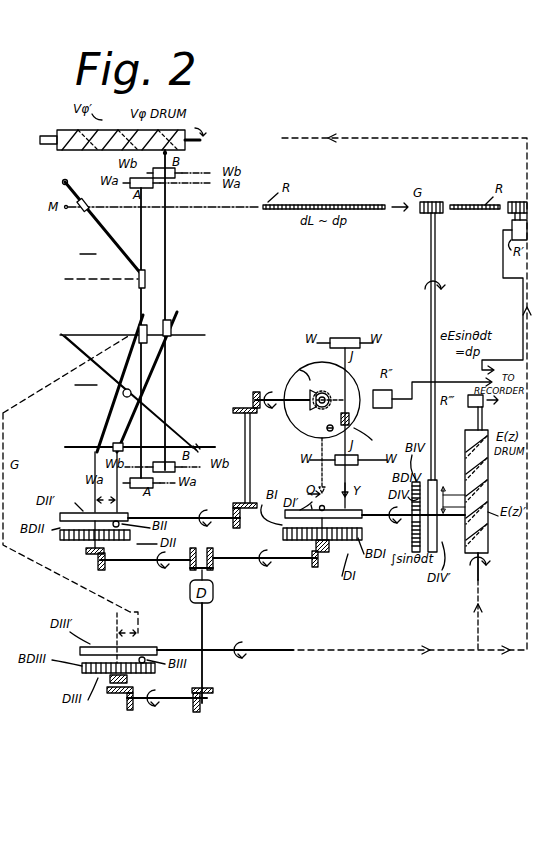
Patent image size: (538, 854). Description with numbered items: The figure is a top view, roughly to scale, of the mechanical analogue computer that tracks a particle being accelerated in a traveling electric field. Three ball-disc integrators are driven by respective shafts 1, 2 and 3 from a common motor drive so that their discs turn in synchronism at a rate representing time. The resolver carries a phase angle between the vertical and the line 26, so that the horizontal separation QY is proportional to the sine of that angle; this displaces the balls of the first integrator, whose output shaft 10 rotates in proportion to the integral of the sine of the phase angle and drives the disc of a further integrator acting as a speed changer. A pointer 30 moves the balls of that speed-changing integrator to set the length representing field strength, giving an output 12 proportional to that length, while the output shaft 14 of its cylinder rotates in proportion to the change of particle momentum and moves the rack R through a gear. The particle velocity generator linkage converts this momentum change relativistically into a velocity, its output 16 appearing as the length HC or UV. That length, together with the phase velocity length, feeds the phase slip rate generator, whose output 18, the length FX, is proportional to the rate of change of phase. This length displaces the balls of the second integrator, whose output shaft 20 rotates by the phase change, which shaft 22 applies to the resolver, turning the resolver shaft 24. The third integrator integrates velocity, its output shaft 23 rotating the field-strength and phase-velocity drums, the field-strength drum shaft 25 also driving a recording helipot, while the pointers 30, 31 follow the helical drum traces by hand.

The pointer 31 is at (168, 153).
The output of the particle velocity generator linkage 16 is at (72, 303).
The output of the phase slip rate generator 18 is at (104, 477).
The output shaft 20 is at (202, 510).
The shaft 2 is at (102, 558).
The shaft 3 is at (166, 698).
The output shaft 23 is at (292, 648).
The output shaft 14 is at (435, 370).
The shaft 22 is at (289, 437).
The resolver shaft 24 is at (315, 382).
The line 26 is at (354, 418).
The shaft of the E(z) drum 25 is at (468, 431).
The pointer 30 is at (465, 490).
The output 12 is at (424, 516).
The output shaft 10 is at (387, 519).
The shaft 1 is at (314, 553).